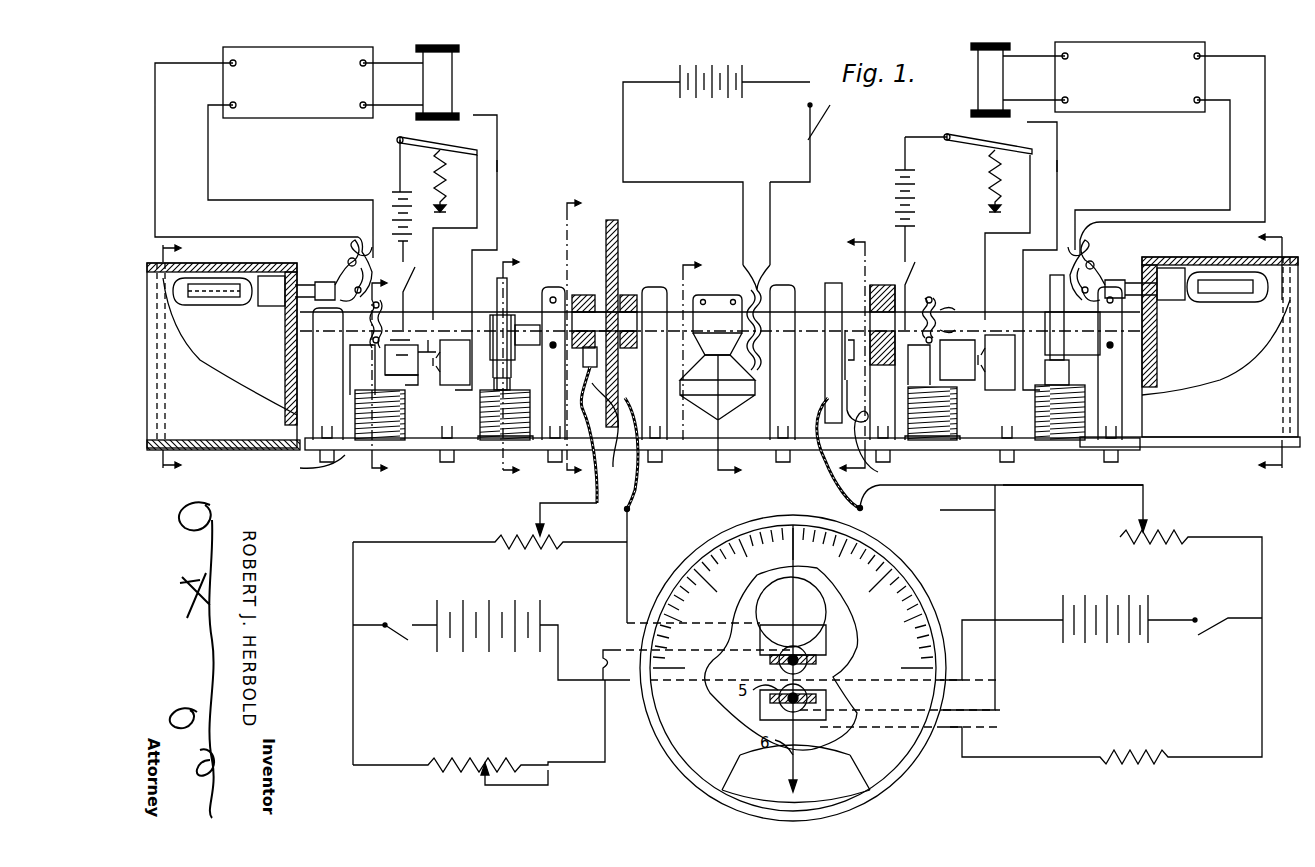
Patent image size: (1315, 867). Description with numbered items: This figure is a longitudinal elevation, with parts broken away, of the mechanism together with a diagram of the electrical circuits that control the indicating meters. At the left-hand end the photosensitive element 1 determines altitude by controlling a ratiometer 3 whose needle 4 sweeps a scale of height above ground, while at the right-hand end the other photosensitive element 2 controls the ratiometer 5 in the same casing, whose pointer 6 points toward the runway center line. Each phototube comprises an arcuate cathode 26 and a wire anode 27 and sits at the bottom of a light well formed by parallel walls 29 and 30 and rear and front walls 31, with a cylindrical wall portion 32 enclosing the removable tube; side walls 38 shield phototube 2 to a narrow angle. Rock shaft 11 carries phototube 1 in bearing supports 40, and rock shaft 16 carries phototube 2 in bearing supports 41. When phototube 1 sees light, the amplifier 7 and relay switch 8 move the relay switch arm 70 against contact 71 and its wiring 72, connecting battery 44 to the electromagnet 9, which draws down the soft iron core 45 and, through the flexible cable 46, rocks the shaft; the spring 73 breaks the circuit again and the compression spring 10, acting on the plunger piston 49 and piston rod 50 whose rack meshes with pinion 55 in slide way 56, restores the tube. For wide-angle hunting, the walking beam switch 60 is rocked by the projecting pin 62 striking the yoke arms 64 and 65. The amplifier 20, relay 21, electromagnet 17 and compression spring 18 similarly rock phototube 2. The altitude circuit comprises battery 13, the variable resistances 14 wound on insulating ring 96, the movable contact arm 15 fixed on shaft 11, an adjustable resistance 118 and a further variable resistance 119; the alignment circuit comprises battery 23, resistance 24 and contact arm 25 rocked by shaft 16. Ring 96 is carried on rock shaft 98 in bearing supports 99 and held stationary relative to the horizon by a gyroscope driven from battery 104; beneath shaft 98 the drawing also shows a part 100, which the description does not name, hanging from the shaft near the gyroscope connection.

The photosensitive element 1 is at (233, 300).
The photosensitive element 2 is at (1203, 310).
The ratiometer 3 is at (805, 650).
The needle 4 is at (792, 600).
The ratiometer 5 is at (386, 376).
The pointer 6 is at (516, 367).
The amplifier 7 is at (340, 118).
The relay switch 8 is at (445, 70).
The electromagnet 9 is at (526, 368).
The compression spring 10 is at (500, 440).
The rock shaft 11 is at (452, 318).
The battery 13 is at (485, 597).
The variable resistance 14 is at (615, 447).
The movable contact arm 15 is at (590, 425).
The rock shaft 16 is at (948, 305).
The electromagnet 17 is at (955, 440).
The compression spring 18 is at (1080, 440).
The amplifier 20 is at (1168, 108).
The relay 21 is at (985, 80).
The battery 23 is at (1080, 595).
The resistance 24 is at (826, 455).
The contact arm 25 is at (878, 472).
The cathode 26 is at (228, 278).
The wire anode 27 is at (228, 300).
The parallel wall 29 is at (222, 355).
The parallel wall 30 is at (230, 346).
The rear and front walls 31 is at (288, 380).
The cylindrical wall portion 32 is at (262, 276).
The side wall 38 is at (235, 450).
The bearing support 40 is at (439, 363).
The bearing support 41 is at (996, 362).
The battery 44 is at (400, 200).
The soft iron core 45 is at (940, 370).
The flexible cable 46 is at (385, 325).
The plunger piston 49 is at (510, 395).
The piston rod 50 is at (508, 300).
The pinion 55 is at (510, 318).
The slide way 56 is at (485, 345).
The walking beam switch 60 is at (724, 362).
The projecting pin 62 is at (401, 357).
The yoke arm 64 is at (428, 345).
The yoke arm 65 is at (418, 385).
The relay switch arm 70 is at (465, 150).
The contact 71 is at (492, 130).
The wiring 72 is at (497, 165).
The spring 73 is at (448, 182).
The insulating ring 96 is at (618, 260).
The rock shaft 98 is at (695, 300).
The bearing support 99 is at (718, 362).
The armature 100 is at (738, 385).
The battery 104 is at (693, 95).
The adjustable resistance 118 is at (512, 755).
The variable resistance 119 is at (552, 538).